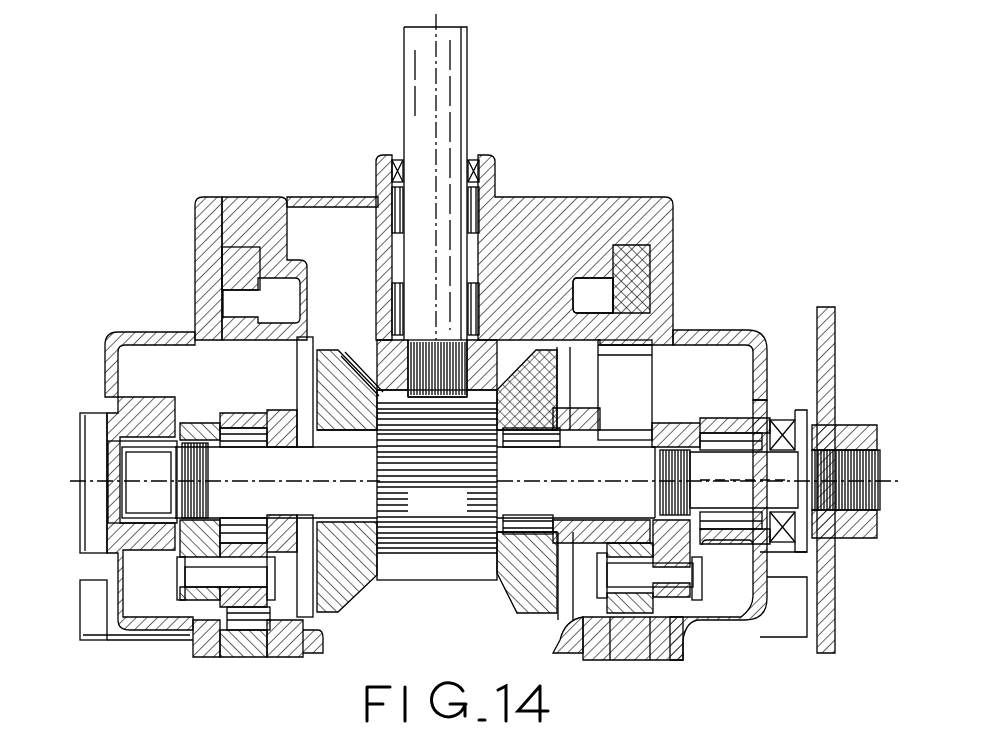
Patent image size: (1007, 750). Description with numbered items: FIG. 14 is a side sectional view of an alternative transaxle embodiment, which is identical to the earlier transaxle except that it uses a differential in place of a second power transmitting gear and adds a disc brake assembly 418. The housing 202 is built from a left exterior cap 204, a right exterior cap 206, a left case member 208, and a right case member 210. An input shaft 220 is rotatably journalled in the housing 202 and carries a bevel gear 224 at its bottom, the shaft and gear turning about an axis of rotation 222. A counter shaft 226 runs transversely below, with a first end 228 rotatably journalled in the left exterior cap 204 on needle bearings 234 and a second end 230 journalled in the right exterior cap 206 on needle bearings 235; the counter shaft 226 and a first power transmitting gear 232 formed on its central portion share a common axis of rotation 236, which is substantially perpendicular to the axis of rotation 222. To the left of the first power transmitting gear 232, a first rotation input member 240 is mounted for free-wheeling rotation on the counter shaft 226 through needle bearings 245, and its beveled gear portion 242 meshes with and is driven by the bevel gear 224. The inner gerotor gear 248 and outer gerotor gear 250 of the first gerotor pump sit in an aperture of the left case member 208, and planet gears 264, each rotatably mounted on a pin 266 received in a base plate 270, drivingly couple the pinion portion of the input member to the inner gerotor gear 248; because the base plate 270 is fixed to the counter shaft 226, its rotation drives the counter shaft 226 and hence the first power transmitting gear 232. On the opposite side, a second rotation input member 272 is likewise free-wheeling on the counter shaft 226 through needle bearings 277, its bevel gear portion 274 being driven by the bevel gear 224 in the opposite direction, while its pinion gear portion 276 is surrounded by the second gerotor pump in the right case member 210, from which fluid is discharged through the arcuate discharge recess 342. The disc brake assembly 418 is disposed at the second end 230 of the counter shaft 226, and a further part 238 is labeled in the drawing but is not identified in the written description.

The housing 202 is at (529, 200).
The left exterior cap 204 is at (203, 225).
The right exterior cap 206 is at (675, 237).
The left case member 208 is at (248, 200).
The right case member 210 is at (604, 199).
The input shaft 220 is at (500, 78).
The axis of rotation 222 is at (436, 22).
The bevel gear 224 is at (503, 340).
The counter shaft 226 is at (315, 514).
The first end 228 is at (137, 462).
The second end 230 is at (770, 493).
The first power transmitting gear 232 is at (465, 514).
The needle bearings 234 is at (162, 440).
The needle bearings 235 is at (723, 437).
The axis of rotation 236 is at (887, 437).
The seal 238 is at (788, 420).
The first rotation input member 240 is at (318, 350).
The beveled gear portion 242 is at (353, 350).
The needle bearings 245 is at (340, 445).
The inner gerotor gear 248 is at (222, 323).
The outer gerotor gear 250 is at (222, 262).
The planet gears 264 is at (250, 615).
The pin 266 is at (197, 580).
The base plate 270 is at (193, 538).
The second rotation input member 272 is at (550, 348).
The bevel gear portion 274 is at (548, 421).
The pinion gear portion 276 is at (630, 422).
The needle bearings 277 is at (533, 525).
The arcuate discharge recess 342 is at (595, 296).
The disc brake assembly 418 is at (836, 338).